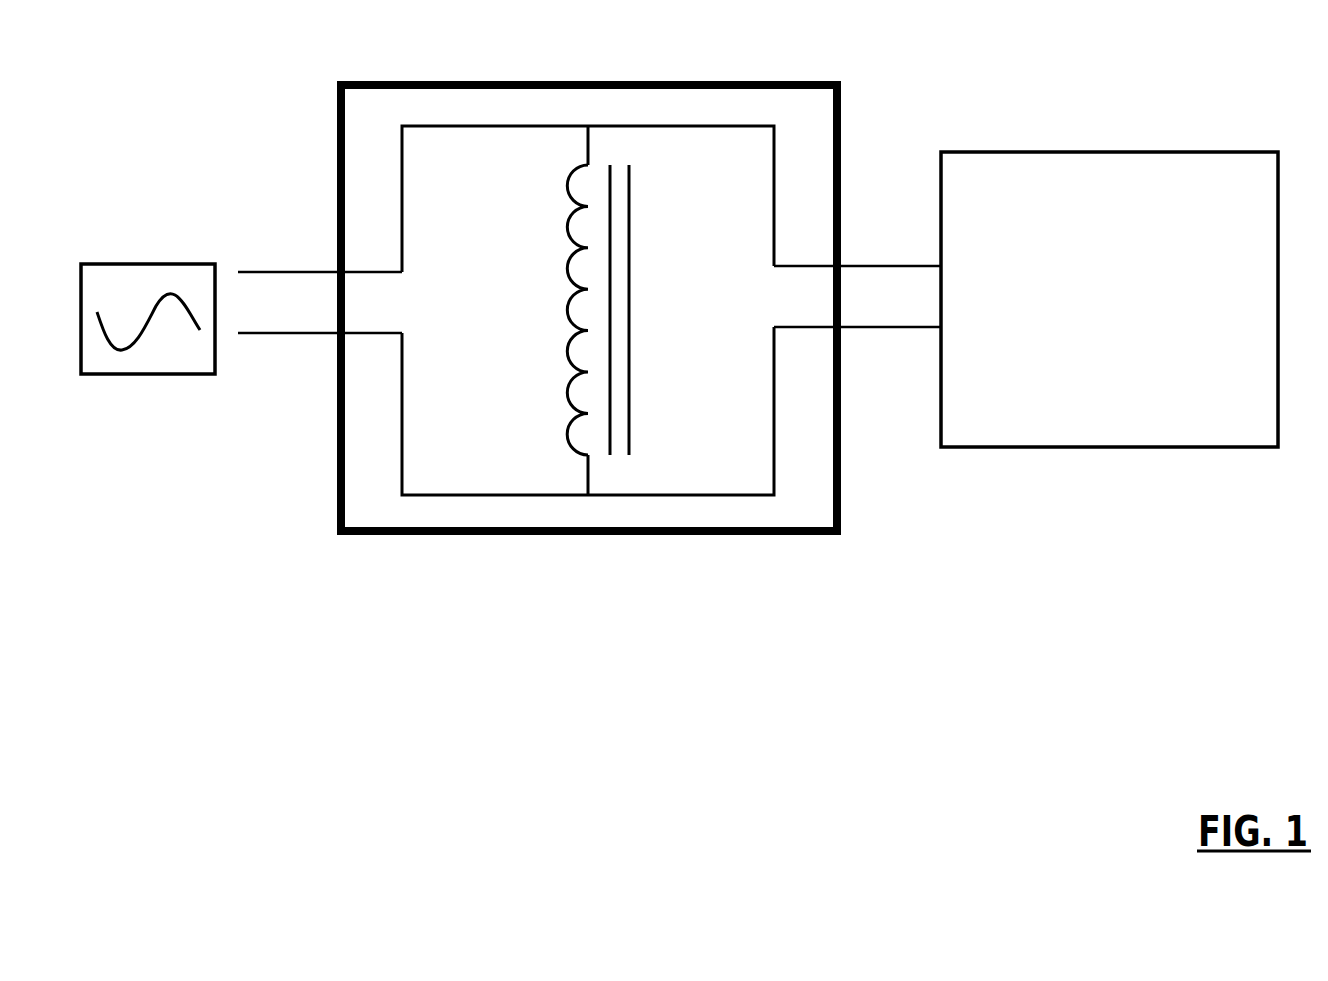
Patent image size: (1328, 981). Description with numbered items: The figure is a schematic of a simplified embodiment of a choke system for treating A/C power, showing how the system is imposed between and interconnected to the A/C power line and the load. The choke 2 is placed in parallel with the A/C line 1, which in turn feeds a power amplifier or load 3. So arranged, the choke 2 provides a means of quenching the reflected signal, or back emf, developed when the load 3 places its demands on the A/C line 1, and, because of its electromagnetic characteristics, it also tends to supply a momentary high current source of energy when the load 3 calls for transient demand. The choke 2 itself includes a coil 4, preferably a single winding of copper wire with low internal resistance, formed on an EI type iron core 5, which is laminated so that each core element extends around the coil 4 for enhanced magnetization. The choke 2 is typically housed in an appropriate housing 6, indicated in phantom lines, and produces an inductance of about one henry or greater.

The A/C line 1 is at (147, 320).
The choke 2 is at (588, 290).
The power amplifier (or load) 3 is at (1141, 306).
The coil 4 is at (558, 310).
The EI type iron core 5 is at (645, 310).
The housing 6 is at (611, 308).